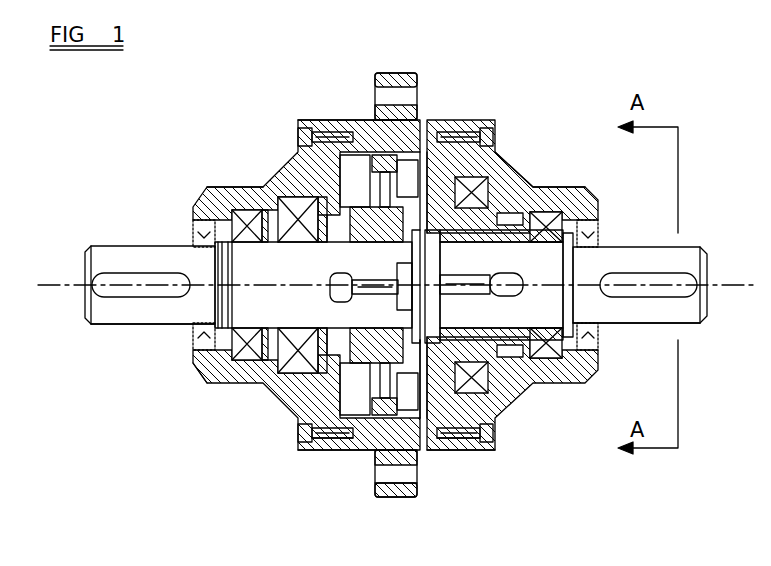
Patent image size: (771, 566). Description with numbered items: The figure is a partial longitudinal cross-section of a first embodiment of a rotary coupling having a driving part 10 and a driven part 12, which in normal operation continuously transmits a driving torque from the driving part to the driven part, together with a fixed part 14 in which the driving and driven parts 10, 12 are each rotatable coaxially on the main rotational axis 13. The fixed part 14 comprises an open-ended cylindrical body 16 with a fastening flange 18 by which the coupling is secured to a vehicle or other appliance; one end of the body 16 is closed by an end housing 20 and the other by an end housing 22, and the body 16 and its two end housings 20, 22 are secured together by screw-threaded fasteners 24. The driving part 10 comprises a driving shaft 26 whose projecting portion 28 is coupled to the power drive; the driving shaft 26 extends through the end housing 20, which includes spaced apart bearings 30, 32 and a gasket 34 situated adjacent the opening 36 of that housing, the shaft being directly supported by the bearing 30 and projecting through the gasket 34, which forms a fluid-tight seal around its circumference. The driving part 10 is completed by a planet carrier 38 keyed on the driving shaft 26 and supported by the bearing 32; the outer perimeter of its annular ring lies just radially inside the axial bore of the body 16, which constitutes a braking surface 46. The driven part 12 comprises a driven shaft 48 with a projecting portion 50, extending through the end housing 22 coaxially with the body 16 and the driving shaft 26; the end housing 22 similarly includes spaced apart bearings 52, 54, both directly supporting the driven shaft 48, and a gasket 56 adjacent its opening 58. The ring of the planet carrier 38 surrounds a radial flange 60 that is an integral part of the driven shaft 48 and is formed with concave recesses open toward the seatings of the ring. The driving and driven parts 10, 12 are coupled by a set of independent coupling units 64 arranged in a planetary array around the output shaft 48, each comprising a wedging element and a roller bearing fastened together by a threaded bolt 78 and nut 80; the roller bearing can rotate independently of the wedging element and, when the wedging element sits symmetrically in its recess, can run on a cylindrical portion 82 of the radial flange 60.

The driving part 10 is at (700, 229).
The driven part 12 is at (111, 224).
The main rotational axis 13 is at (52, 283).
The fixed part 14 is at (468, 473).
The cylindrical body 16 is at (333, 451).
The fastening flange 18 is at (412, 496).
The end housing 20 is at (527, 395).
The end housing 22 is at (262, 393).
The screw-threaded fasteners 24 is at (297, 131).
The driving shaft 26 is at (618, 311).
The projecting portion 28 is at (685, 326).
The bearing 30 is at (547, 217).
The bearing 32 is at (505, 178).
The gasket 34 is at (598, 344).
The opening 36 is at (600, 246).
The planet carrier 38 is at (465, 452).
The braking surface 46 is at (425, 154).
The driven shaft 48 is at (168, 317).
The projecting portion 50 is at (100, 318).
The bearing 52 is at (190, 200).
The bearing 54 is at (263, 186).
The gasket 56 is at (193, 356).
The opening 58 is at (191, 238).
The radial flange 60 is at (332, 378).
The coupling units 64 is at (381, 143).
The threaded bolt 78 is at (367, 452).
The nut 80 is at (412, 420).
The cylindrical portion 82 is at (345, 333).